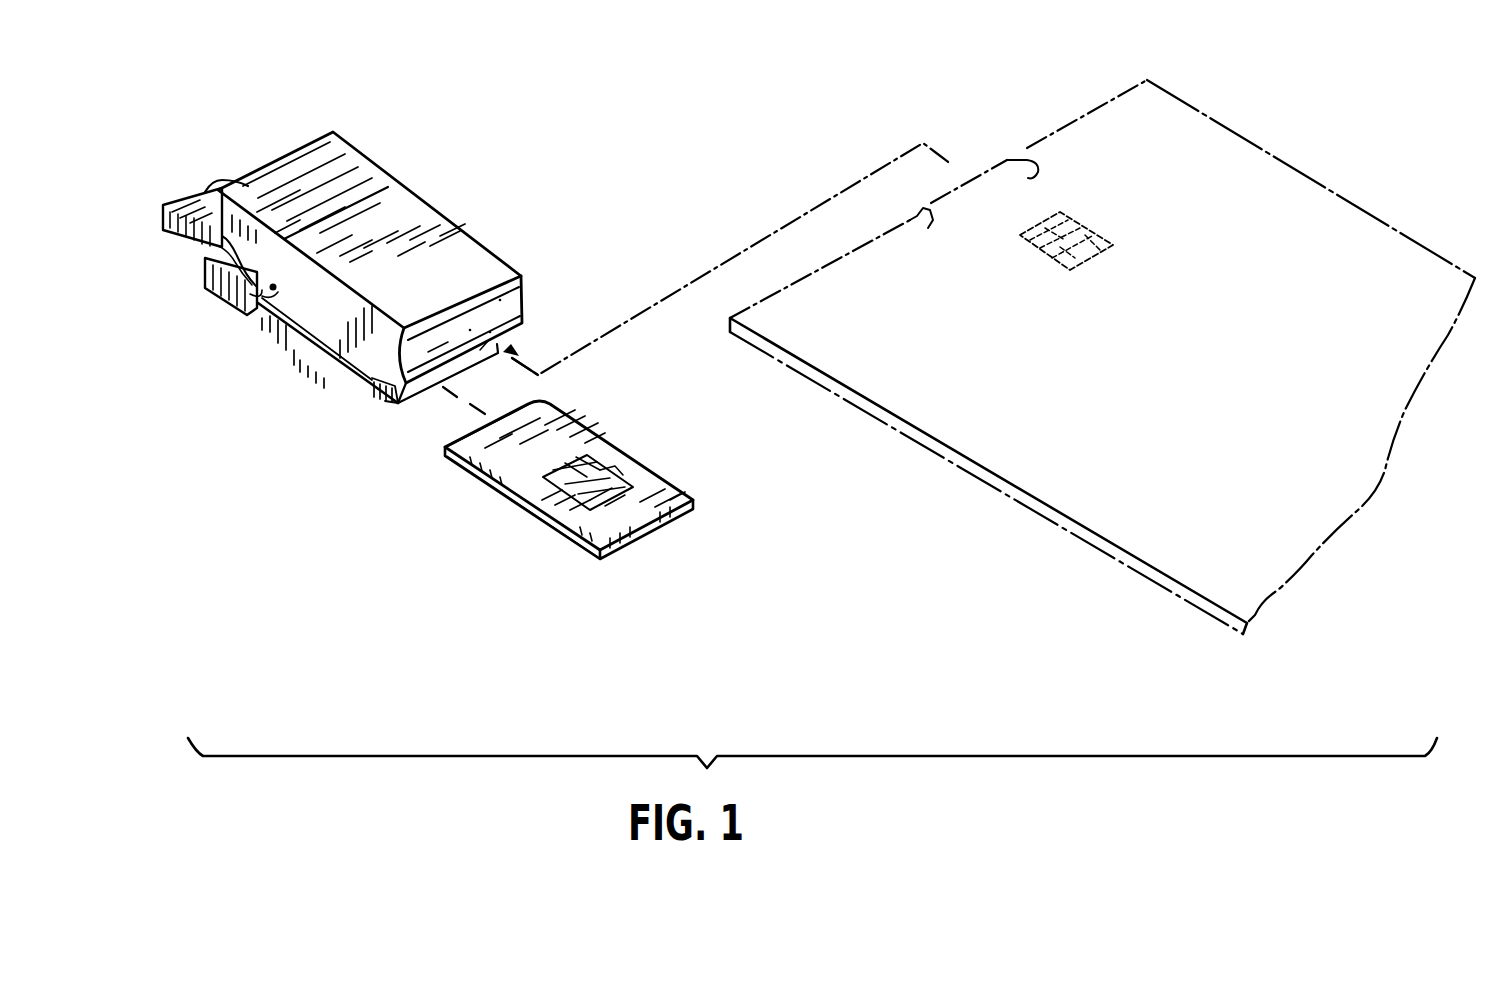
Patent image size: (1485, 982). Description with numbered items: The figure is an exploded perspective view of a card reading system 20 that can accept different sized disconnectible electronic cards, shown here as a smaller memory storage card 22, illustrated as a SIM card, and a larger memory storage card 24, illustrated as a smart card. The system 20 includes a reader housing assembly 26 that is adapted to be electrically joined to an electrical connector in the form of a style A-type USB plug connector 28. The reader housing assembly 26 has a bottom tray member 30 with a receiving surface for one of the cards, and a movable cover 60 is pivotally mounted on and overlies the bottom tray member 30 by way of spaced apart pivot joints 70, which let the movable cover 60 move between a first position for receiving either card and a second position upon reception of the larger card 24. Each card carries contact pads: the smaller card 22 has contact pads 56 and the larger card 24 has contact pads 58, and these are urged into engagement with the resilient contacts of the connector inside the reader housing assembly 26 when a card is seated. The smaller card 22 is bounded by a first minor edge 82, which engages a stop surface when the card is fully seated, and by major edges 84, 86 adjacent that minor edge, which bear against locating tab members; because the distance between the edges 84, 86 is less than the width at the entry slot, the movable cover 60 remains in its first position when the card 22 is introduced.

The card reading system 20 is at (497, 141).
The memory storage card 22 is at (588, 528).
The memory storage card 24 is at (1263, 182).
The reader housing assembly 26 is at (380, 163).
The USB plug connector 28 is at (190, 192).
The bottom tray member 30 is at (355, 385).
The contact pads 56 is at (617, 475).
The contact pads 58 is at (1062, 262).
The movable cover 60 is at (468, 229).
The pivot joints 70 is at (268, 298).
The first minor edge 82 is at (450, 432).
The major edge 84 is at (500, 500).
The major edge 86 is at (612, 431).